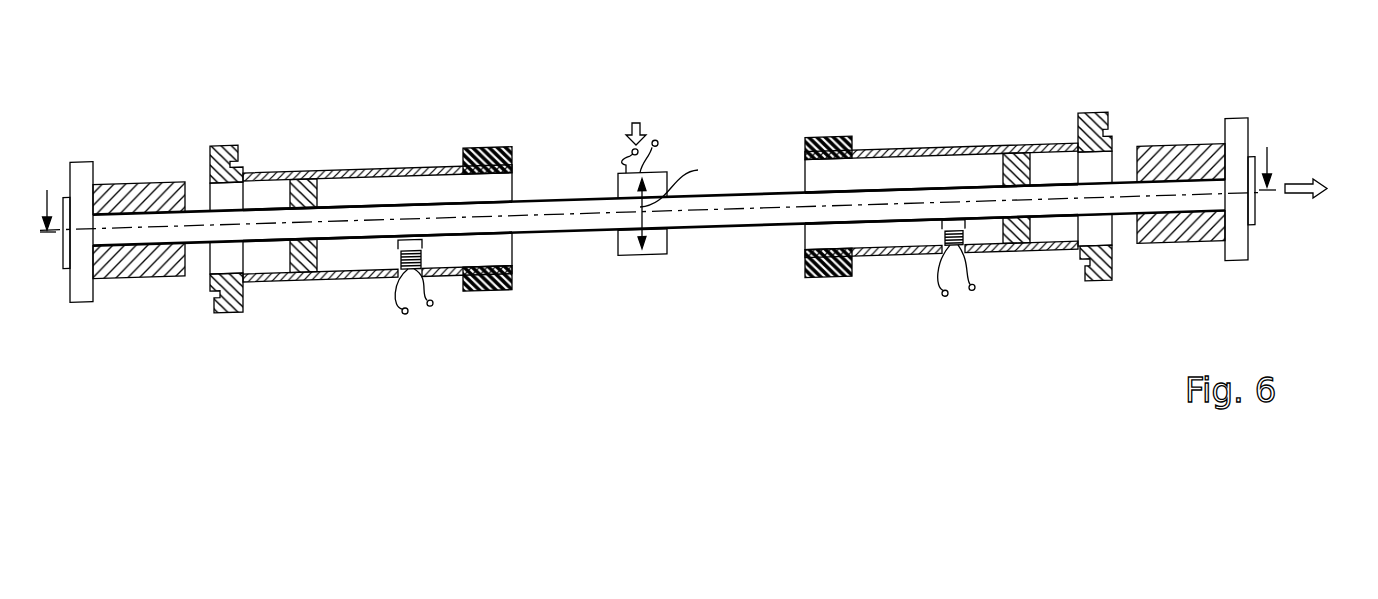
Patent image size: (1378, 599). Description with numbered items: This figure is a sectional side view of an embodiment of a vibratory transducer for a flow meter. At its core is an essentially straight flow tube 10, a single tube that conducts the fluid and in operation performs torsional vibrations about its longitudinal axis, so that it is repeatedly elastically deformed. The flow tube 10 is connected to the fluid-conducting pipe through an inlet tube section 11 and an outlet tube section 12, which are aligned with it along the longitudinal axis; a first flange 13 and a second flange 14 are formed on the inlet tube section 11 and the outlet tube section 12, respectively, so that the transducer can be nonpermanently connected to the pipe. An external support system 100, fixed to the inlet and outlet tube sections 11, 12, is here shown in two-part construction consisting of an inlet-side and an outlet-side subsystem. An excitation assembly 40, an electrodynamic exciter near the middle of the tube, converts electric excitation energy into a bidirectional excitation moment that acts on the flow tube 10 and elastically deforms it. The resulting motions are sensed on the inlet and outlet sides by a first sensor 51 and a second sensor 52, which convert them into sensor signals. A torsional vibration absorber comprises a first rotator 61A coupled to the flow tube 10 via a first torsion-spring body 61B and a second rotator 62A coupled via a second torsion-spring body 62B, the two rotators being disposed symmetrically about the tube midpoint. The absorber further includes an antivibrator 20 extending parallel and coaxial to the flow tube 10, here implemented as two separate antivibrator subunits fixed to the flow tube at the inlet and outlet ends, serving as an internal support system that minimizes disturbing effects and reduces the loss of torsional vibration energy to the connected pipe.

The external support system 100 is at (124, 156).
The flow tube 10 is at (560, 207).
The inlet tube section 11 is at (222, 222).
The outlet tube section 12 is at (1098, 190).
The first flange 13 is at (80, 178).
The second flange 14 is at (1233, 130).
The antivibrator 20 is at (389, 345).
The excitation assembly 40 is at (690, 243).
The first sensor 51 is at (385, 260).
The second sensor 52 is at (927, 240).
The first rotator 61A is at (288, 282).
The first torsion-spring body 61B is at (224, 316).
The second rotator 62A is at (1013, 255).
The second torsion-spring body 62B is at (1099, 284).